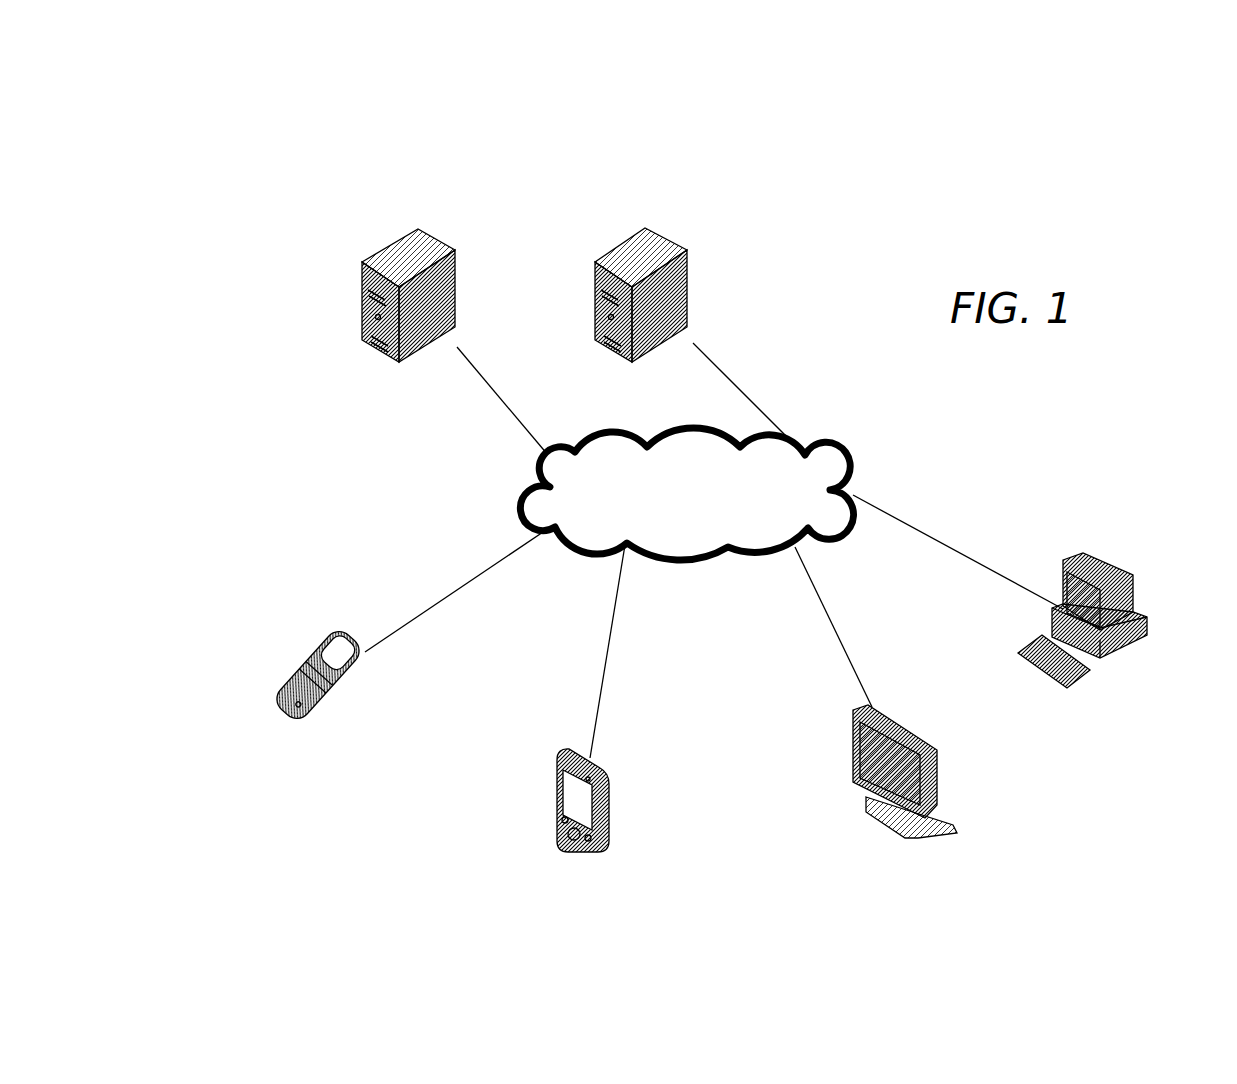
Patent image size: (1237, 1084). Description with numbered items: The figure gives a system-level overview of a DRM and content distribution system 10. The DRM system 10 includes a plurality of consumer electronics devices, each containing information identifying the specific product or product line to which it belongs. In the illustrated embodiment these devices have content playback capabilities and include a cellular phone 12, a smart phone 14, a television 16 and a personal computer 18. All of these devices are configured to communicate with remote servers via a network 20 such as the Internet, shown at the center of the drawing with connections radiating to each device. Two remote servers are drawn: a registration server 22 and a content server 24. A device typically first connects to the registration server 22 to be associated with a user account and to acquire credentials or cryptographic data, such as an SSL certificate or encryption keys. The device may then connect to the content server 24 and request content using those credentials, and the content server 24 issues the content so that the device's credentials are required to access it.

The DRM system 10 is at (330, 213).
The cellular phone 12 is at (310, 670).
The smart phone 14 is at (582, 800).
The television 16 is at (902, 770).
The personal computer 18 is at (1093, 622).
The network 20 is at (526, 494).
The registration server 22 is at (455, 287).
The content server 24 is at (688, 277).